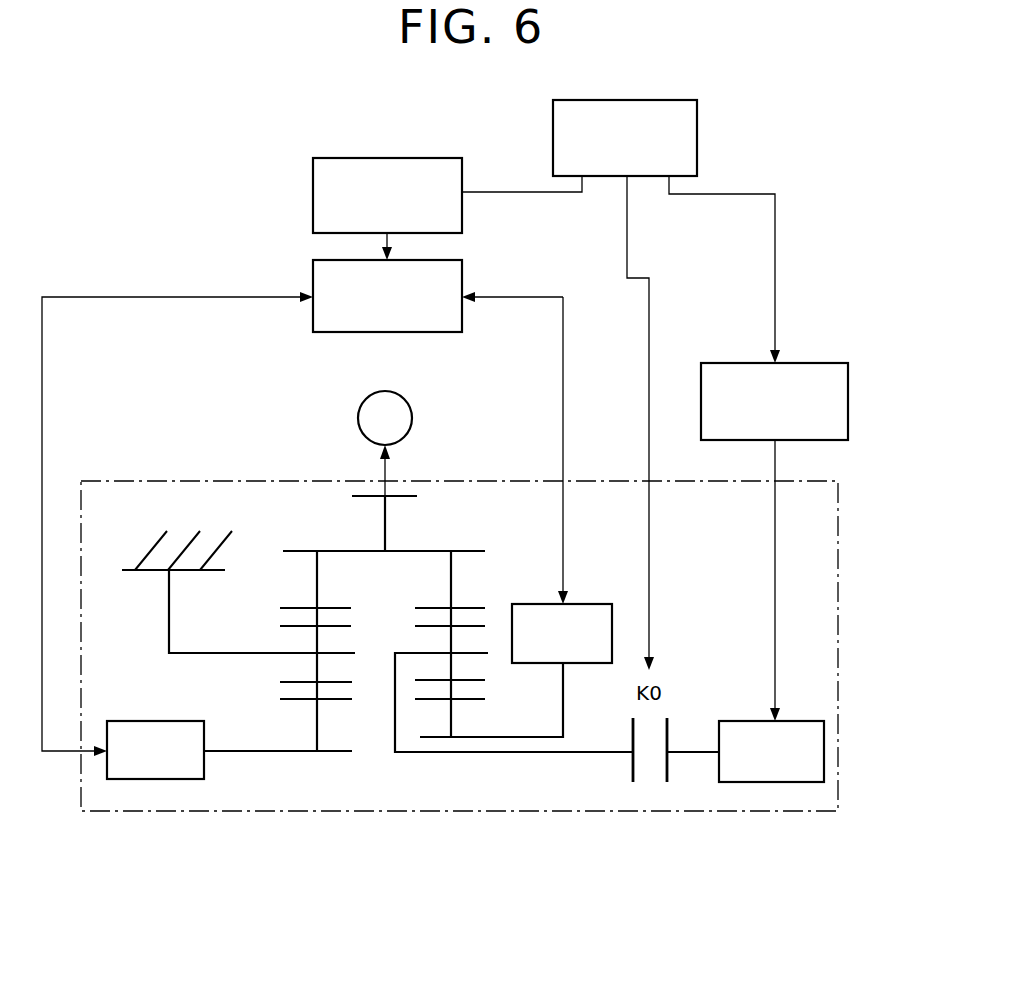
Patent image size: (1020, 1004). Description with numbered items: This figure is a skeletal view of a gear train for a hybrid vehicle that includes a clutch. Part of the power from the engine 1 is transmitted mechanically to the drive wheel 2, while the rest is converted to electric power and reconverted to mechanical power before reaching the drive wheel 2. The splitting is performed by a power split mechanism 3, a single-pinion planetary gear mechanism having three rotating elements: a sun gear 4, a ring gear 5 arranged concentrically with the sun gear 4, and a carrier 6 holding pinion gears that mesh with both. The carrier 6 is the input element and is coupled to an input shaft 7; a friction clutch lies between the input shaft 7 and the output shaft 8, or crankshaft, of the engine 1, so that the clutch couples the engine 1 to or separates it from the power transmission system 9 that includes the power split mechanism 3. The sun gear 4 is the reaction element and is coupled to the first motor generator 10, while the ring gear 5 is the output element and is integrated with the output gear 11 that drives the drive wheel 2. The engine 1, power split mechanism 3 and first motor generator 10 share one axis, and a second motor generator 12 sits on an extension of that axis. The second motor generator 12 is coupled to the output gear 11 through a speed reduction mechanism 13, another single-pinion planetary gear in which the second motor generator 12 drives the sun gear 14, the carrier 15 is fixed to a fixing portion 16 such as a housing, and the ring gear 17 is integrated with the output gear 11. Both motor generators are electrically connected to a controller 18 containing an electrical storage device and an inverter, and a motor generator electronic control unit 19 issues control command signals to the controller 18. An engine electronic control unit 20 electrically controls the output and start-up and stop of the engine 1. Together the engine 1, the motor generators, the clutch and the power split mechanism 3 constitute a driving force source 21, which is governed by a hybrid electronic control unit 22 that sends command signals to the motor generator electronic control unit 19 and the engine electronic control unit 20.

The engine 1 is at (805, 721).
The drive wheel 2 is at (412, 416).
The power split mechanism 3 is at (434, 633).
The sun gear 4 is at (470, 700).
The ring gear 5 is at (432, 608).
The carrier 6 is at (407, 653).
The input shaft 7 is at (575, 756).
The output shaft 8 is at (700, 750).
The power transmission system 9 is at (327, 793).
The first motor generator 10 is at (589, 604).
The output gear 11 is at (405, 498).
The second motor generator 12 is at (152, 721).
The speed reduction mechanism 13 is at (273, 726).
The sun gear 14 is at (340, 700).
The carrier 15 is at (217, 653).
The fixing portion 16 is at (168, 545).
The ring gear 17 is at (290, 608).
The controller 18 is at (462, 272).
The motor generator electronic control unit 19 is at (418, 158).
The engine electronic control unit 20 is at (823, 363).
The driving force source 21 is at (838, 563).
The hybrid electronic control unit 22 is at (698, 132).